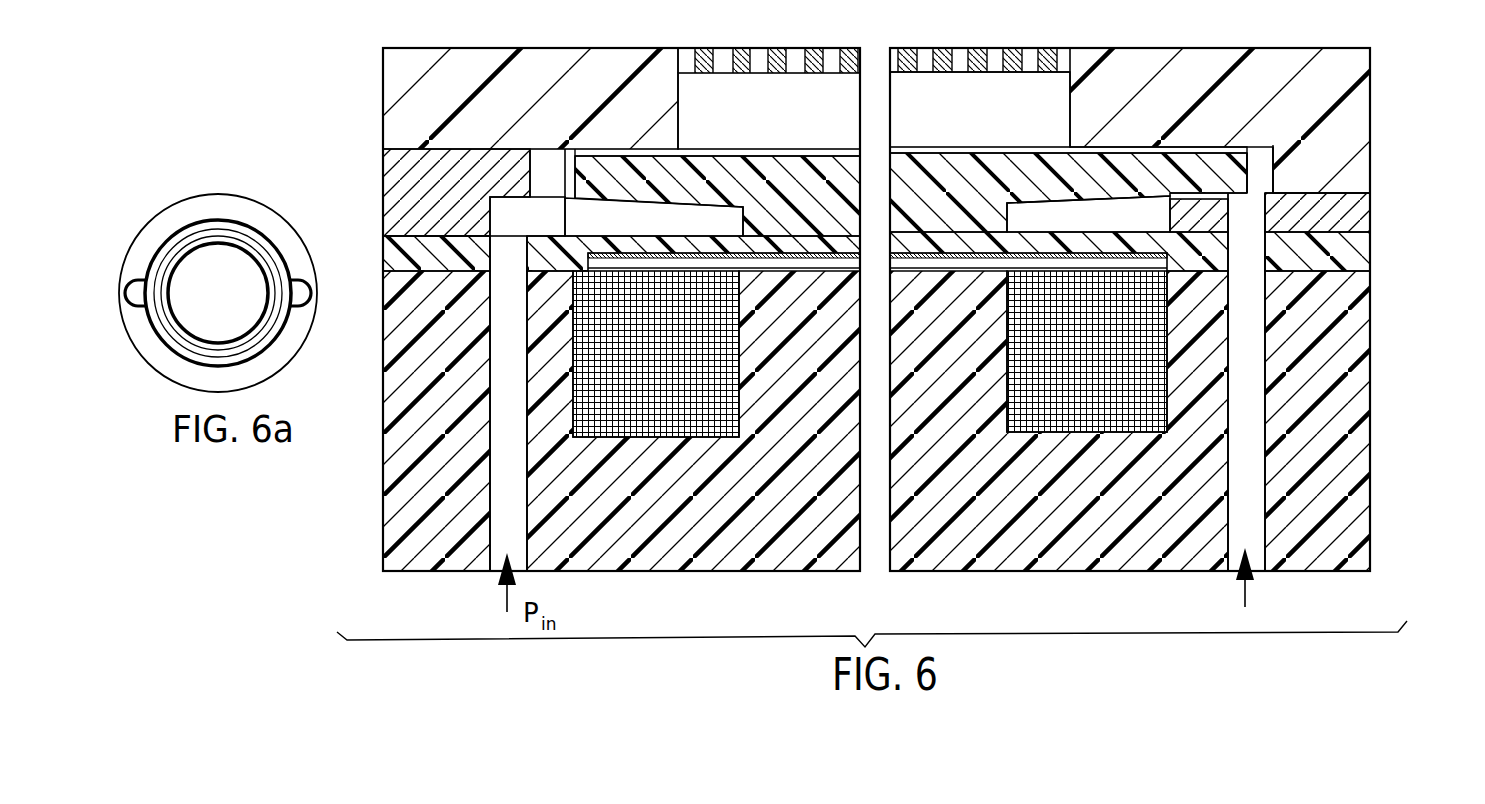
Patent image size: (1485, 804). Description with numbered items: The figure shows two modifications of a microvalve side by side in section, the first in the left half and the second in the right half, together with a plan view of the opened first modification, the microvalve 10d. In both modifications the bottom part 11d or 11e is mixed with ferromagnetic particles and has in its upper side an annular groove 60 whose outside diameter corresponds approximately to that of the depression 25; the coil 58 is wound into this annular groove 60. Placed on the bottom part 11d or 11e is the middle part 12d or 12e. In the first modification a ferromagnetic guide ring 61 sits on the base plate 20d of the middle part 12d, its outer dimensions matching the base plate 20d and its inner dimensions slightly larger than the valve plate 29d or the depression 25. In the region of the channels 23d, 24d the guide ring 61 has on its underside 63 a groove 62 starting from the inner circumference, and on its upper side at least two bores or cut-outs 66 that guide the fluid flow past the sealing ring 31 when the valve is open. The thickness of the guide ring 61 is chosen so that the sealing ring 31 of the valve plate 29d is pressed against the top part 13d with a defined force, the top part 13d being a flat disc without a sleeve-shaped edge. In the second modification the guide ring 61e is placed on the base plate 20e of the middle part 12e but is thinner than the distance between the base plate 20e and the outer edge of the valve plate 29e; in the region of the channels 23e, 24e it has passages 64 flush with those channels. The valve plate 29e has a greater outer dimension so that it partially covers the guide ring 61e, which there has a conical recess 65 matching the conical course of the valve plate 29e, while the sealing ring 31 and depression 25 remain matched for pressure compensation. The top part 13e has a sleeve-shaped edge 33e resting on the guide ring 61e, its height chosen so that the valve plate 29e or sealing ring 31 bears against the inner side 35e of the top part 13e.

In FIG. 6, the microvalve 10d is at (316, 595).
In FIG. 6, the bottom part 11d is at (376, 487).
In FIG. 6, the bottom part 11e is at (1381, 443).
In FIG. 6, the middle part 12d is at (378, 260).
In FIG. 6, the middle part 12e is at (1378, 252).
In FIG. 6, the top part 13d is at (575, 70).
In FIG. 6, the top part 13e is at (1360, 82).
In FIG. 6, the base plate 20d is at (407, 250).
In FIG. 6, the base plate 20e is at (1332, 262).
In FIG. 6, the channel 23d is at (461, 403).
In FIG. 6, the channel 24d is at (508, 256).
In FIG. 6, the channel 23e is at (1353, 382).
In FIG. 6, the channel 24e is at (1252, 262).
In FIG. 6, the depression 25 is at (800, 262).
In FIG. 6, the valve plate 29d is at (612, 178).
In FIG. 6a, the valve plate 29d is at (234, 262).
In FIG. 6, the valve plate 29e is at (1250, 165).
In FIG. 6, the sealing ring 31 is at (614, 150).
In FIG. 6a, the sealing ring 31 is at (229, 247).
In FIG. 6, the sleeve-shaped edge 33e is at (1300, 170).
In FIG. 6, the inner side 35e is at (1078, 160).
In FIG. 6, the coil 58 is at (673, 402).
In FIG. 6, the annular groove 60 is at (575, 400).
In FIG. 6, the guide ring 61 is at (398, 183).
In FIG. 6a, the guide ring 61 is at (173, 215).
In FIG. 6, the guide ring 61e is at (1343, 208).
In FIG. 6, the groove 62 is at (552, 221).
In FIG. 6, the underside 63 is at (595, 250).
In FIG. 6, the passages 64 is at (1275, 195).
In FIG. 6, the conical recess 65 is at (1182, 192).
In FIG. 6, the bores or cut-outs 66 is at (543, 163).
In FIG. 6a, the bores or cut-outs 66 is at (134, 301).